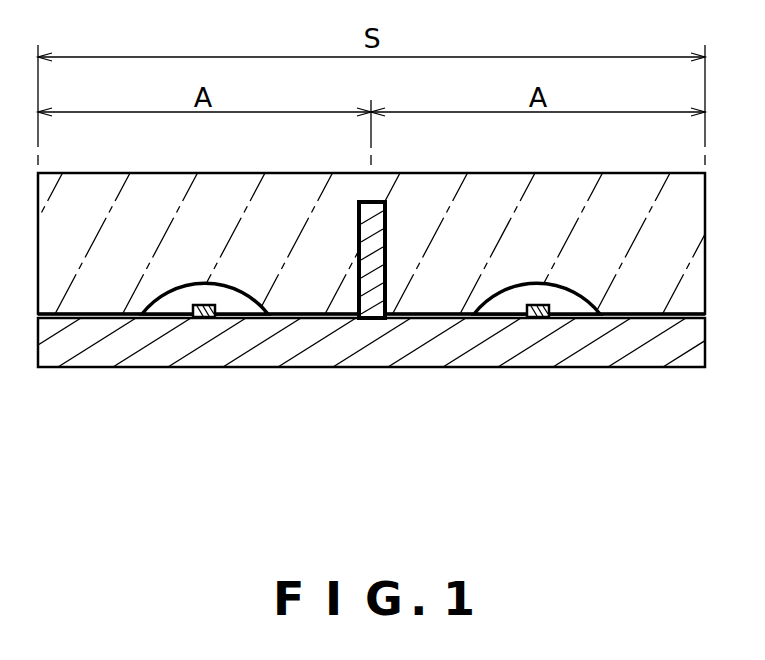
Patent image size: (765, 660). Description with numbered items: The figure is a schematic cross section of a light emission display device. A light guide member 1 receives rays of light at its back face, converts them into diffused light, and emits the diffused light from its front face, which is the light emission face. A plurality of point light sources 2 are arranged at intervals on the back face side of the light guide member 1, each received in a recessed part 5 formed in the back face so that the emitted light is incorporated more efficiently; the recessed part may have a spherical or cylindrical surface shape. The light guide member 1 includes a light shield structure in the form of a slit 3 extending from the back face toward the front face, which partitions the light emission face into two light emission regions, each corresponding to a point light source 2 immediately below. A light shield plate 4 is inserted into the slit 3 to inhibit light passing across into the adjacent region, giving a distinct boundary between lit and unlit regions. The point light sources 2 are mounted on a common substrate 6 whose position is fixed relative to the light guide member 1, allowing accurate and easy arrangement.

The light guide member 1 is at (132, 320).
The point light source 2 is at (203, 320).
The slit 3 is at (385, 320).
The light shield plate 4 is at (372, 319).
The recessed part 5 is at (238, 294).
The substrate 6 is at (478, 352).